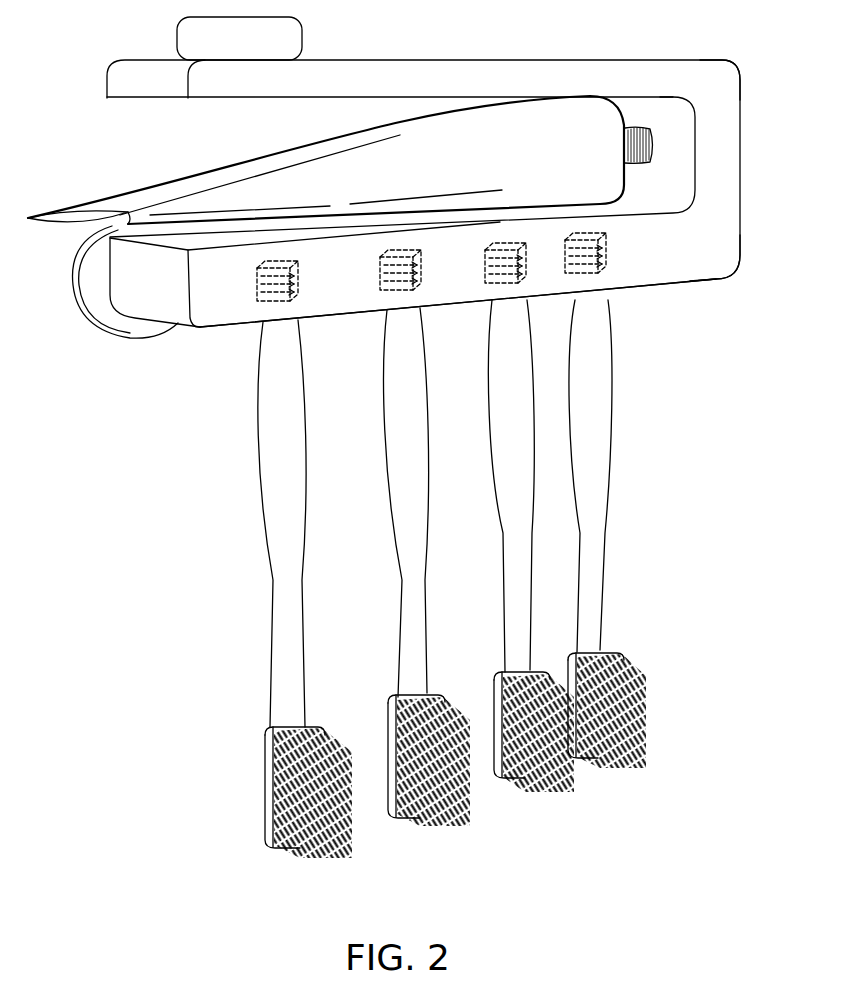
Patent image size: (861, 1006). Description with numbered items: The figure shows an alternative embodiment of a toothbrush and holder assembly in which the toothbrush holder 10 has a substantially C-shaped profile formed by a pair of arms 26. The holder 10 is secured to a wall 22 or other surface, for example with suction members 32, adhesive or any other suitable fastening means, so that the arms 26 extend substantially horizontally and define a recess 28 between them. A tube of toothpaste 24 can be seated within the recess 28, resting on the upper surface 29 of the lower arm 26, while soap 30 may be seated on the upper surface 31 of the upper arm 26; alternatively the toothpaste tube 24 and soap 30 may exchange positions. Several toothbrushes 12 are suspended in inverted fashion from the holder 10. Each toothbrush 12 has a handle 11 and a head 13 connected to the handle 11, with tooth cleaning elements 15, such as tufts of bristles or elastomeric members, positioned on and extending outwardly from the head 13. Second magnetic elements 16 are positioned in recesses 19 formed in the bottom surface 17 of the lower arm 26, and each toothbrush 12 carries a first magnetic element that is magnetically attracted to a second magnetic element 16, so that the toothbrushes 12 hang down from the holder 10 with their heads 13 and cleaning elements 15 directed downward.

The toothbrush holder 10 is at (725, 180).
The handle 11 is at (603, 487).
The toothbrush 12 is at (405, 657).
The head 13 is at (607, 652).
The tooth cleaning elements 15 is at (640, 718).
The second magnetic element 16 is at (380, 271).
The bottom surface 17 is at (628, 292).
The recess 19 is at (257, 289).
The wall 22 is at (100, 530).
The tube of toothpaste 24 is at (488, 166).
The arms 26 is at (633, 68).
The recess 28 is at (147, 146).
The upper surface of lower arm 29 is at (628, 215).
The soap 30 is at (253, 52).
The upper surface of upper arm 31 is at (505, 60).
The suction members 32 is at (105, 317).